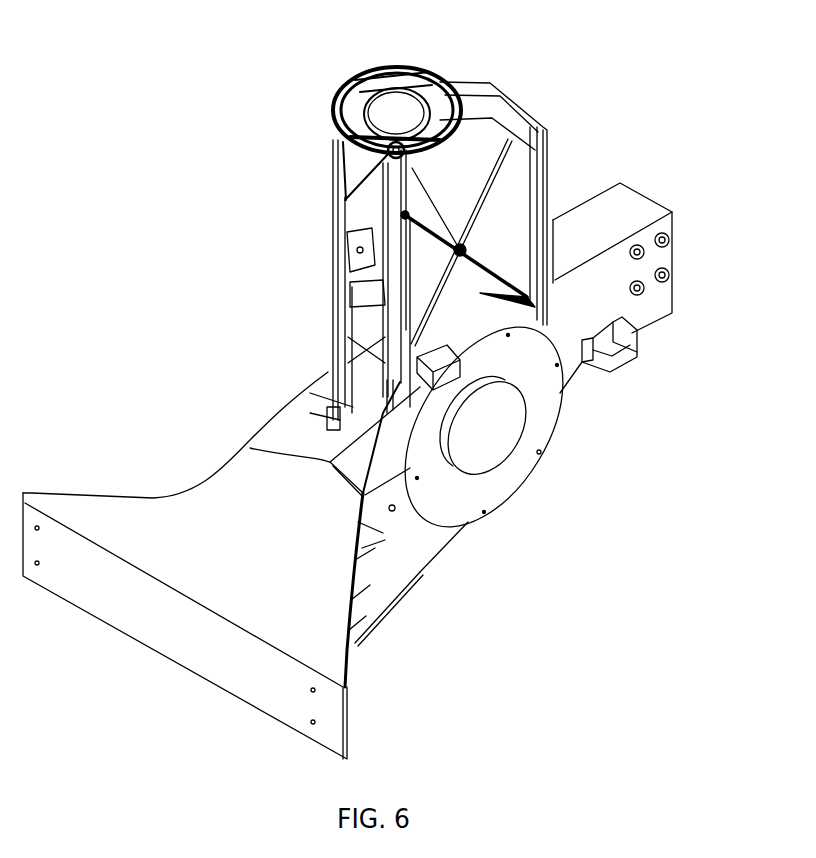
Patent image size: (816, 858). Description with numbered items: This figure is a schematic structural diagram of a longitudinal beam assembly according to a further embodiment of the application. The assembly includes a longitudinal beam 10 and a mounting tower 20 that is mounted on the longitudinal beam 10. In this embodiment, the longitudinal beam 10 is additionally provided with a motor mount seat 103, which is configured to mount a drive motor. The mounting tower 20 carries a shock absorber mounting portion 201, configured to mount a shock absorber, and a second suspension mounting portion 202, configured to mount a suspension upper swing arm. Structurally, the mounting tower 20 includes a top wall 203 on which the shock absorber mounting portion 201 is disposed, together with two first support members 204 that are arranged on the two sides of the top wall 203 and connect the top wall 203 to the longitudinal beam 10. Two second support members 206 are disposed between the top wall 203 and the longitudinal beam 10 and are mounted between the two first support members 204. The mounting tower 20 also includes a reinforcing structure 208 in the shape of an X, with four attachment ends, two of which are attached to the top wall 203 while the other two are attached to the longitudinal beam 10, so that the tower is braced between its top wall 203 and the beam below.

The longitudinal beam 10 is at (420, 573).
The motor mount seat 103 is at (548, 423).
The mounting tower 20 is at (392, 221).
The shock absorber mounting portion 201 is at (333, 115).
The second suspension mounting portion 202 is at (350, 243).
The top wall 203 is at (355, 80).
The first support member 204 is at (330, 373).
The second support member 206 is at (377, 305).
The reinforcing structure 208 is at (485, 200).